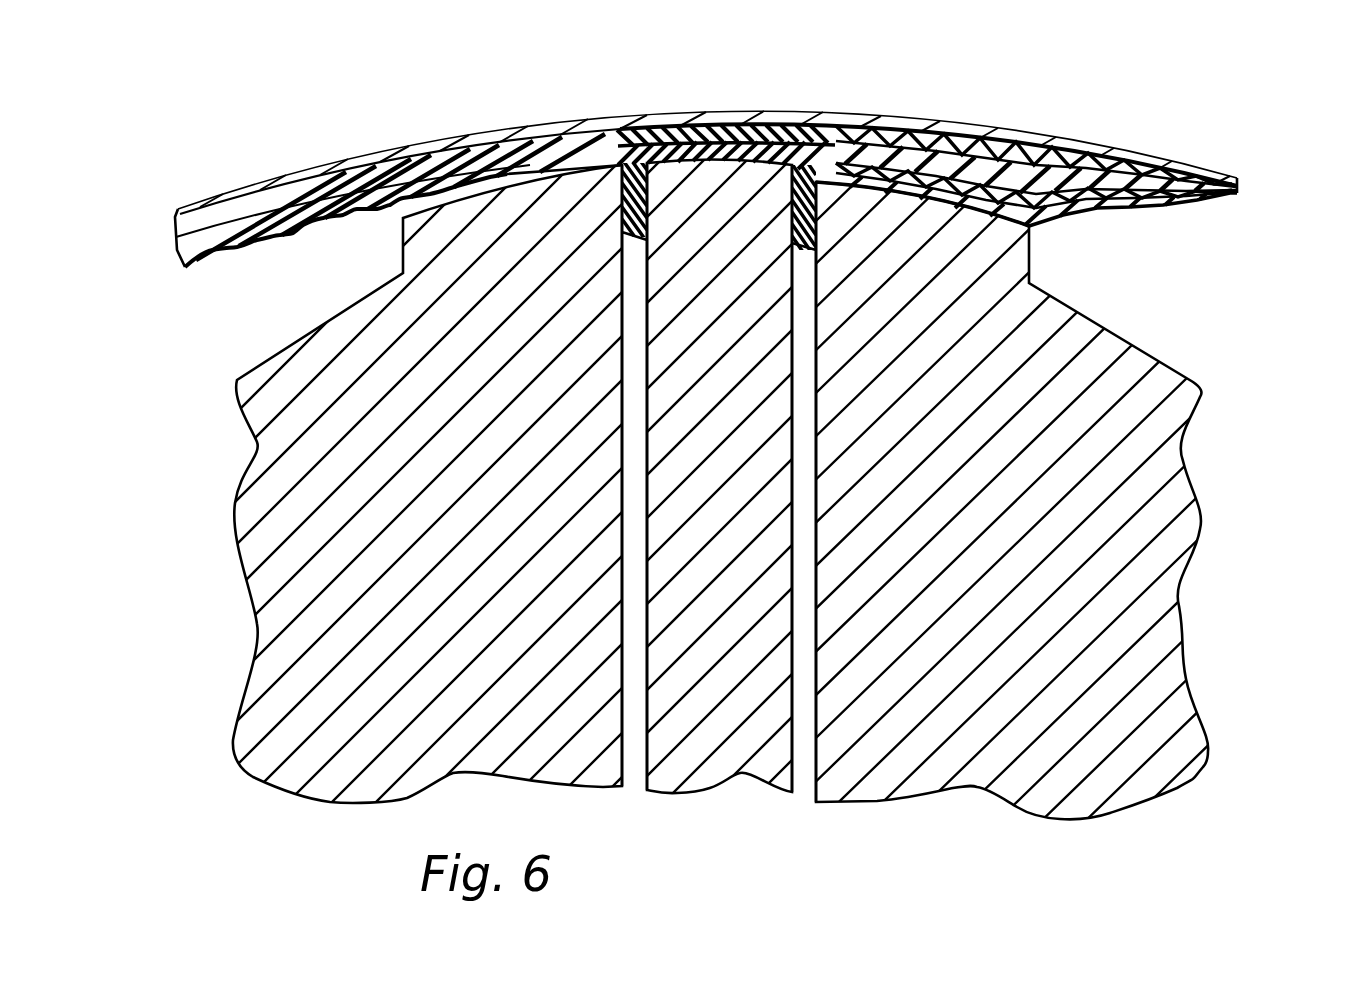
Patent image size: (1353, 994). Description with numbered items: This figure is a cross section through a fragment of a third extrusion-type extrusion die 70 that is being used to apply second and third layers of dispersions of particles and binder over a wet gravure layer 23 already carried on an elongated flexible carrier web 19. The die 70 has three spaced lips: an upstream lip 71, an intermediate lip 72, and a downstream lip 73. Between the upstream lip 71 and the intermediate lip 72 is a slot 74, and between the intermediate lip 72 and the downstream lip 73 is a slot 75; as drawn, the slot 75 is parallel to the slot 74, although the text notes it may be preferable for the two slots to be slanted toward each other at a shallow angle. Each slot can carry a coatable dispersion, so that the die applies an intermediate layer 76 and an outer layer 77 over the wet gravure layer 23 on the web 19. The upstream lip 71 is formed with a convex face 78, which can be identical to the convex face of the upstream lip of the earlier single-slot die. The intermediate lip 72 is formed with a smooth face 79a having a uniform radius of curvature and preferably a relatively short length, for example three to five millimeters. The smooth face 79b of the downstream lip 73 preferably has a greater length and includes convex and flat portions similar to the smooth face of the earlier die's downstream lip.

The extrusion die 70 is at (676, 454).
The upstream lip 71 is at (273, 456).
The intermediate lip 72 is at (718, 762).
The downstream lip 73 is at (1162, 423).
The slot 74 is at (632, 748).
The slot 75 is at (802, 742).
The carrier web 19 is at (333, 172).
The wet gravure layer 23 is at (262, 233).
The convex face 78 is at (473, 182).
The smooth face 79a is at (717, 163).
The smooth face 79b is at (905, 186).
The outer layer 77 is at (1000, 186).
The intermediate layer 76 is at (1058, 182).